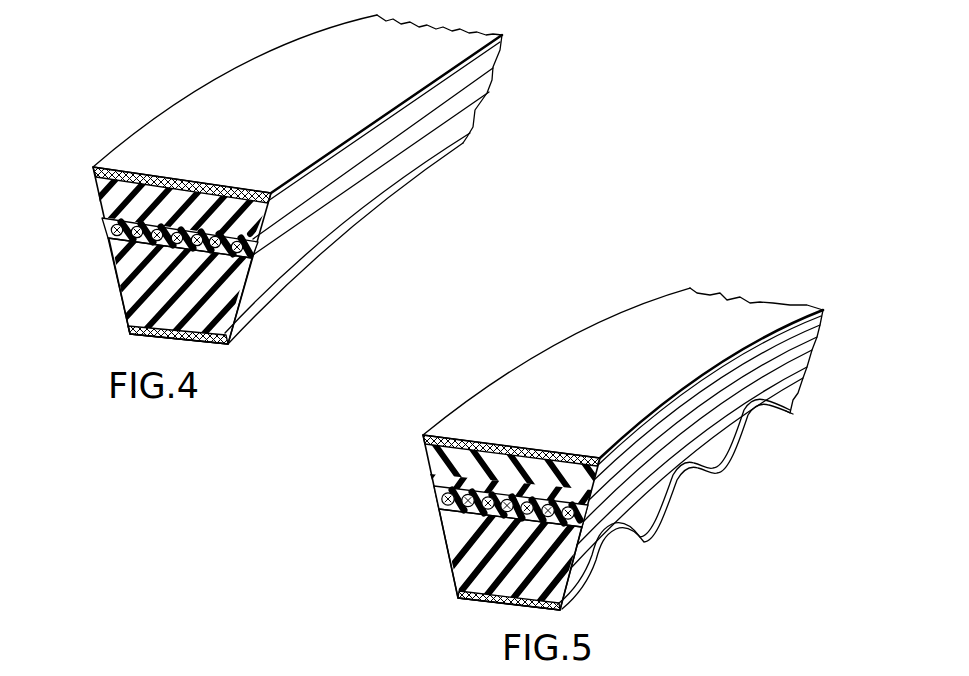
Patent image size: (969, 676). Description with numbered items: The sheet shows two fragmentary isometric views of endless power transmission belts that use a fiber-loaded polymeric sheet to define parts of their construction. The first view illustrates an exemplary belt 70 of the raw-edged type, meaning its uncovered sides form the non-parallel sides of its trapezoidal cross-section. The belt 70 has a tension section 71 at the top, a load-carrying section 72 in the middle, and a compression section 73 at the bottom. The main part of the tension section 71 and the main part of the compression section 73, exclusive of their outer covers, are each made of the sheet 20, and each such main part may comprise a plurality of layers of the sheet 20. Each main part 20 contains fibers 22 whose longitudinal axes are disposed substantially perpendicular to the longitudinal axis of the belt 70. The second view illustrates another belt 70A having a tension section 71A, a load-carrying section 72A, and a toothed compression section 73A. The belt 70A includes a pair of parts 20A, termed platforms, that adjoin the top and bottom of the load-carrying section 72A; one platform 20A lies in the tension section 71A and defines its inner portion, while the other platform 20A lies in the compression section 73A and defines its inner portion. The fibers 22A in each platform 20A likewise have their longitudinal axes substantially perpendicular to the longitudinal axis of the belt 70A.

In FIG. 4, the belt 70 is at (297, 179).
In FIG. 4, the tension section 71 is at (78, 185).
In FIG. 4, the load-carrying section 72 is at (92, 229).
In FIG. 4, the compression section 73 is at (108, 303).
In FIG. 4, the sheet 20 is at (100, 202).
In FIG. 4, the fibers 22 is at (100, 168).
In FIG. 5, the belt 70A is at (623, 442).
In FIG. 5, the tension section 71A is at (414, 453).
In FIG. 5, the load-carrying section 72A is at (423, 503).
In FIG. 5, the toothed compression section 73A is at (441, 569).
In FIG. 5, the platforms 20A is at (432, 478).
In FIG. 5, the fibers 22A is at (588, 490).